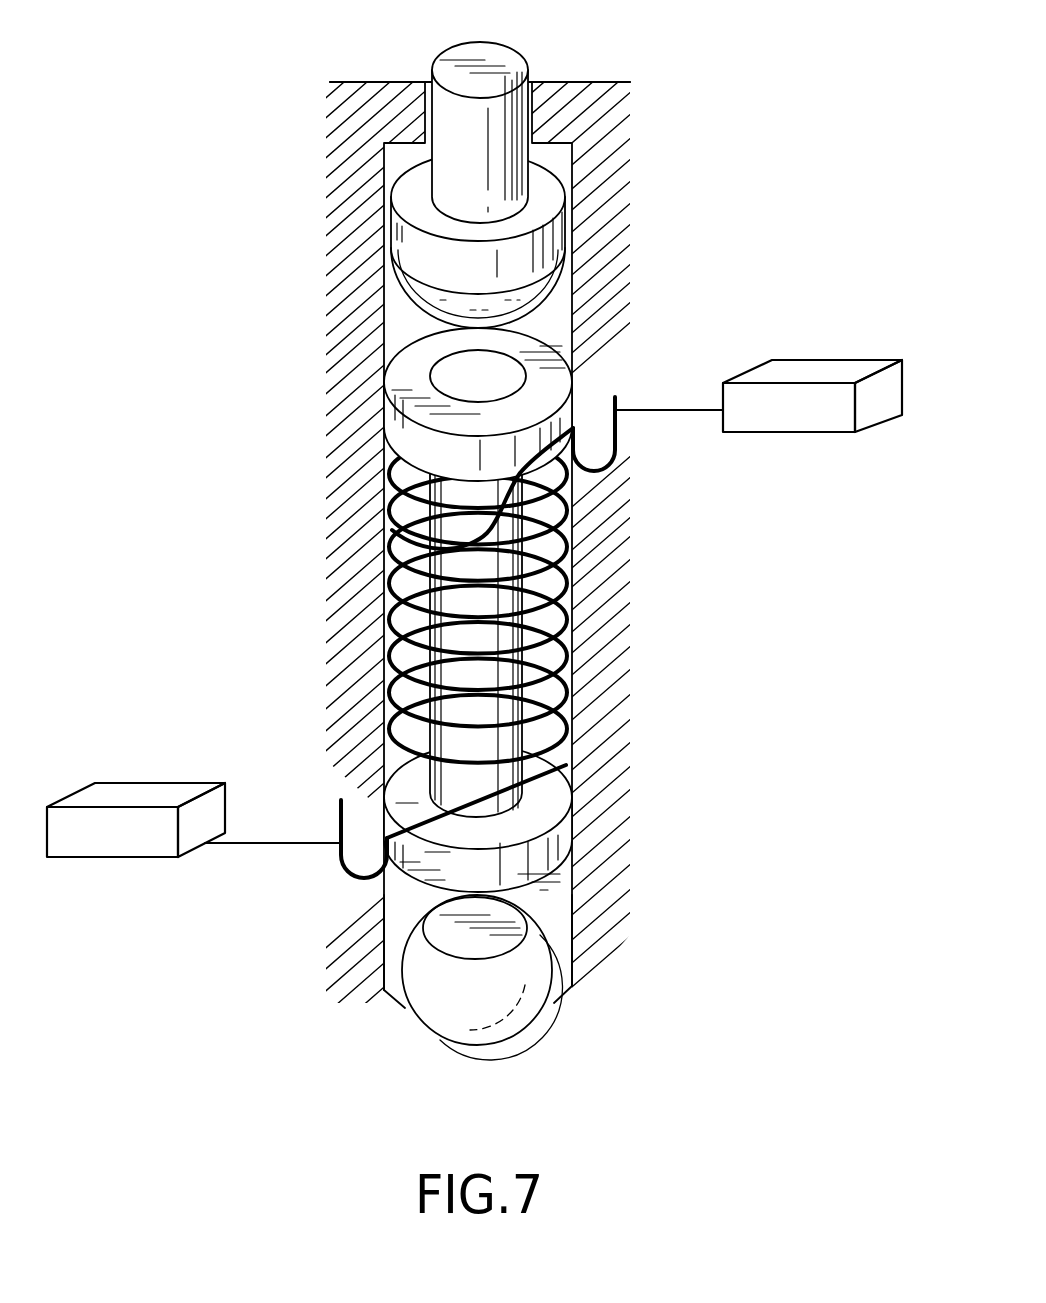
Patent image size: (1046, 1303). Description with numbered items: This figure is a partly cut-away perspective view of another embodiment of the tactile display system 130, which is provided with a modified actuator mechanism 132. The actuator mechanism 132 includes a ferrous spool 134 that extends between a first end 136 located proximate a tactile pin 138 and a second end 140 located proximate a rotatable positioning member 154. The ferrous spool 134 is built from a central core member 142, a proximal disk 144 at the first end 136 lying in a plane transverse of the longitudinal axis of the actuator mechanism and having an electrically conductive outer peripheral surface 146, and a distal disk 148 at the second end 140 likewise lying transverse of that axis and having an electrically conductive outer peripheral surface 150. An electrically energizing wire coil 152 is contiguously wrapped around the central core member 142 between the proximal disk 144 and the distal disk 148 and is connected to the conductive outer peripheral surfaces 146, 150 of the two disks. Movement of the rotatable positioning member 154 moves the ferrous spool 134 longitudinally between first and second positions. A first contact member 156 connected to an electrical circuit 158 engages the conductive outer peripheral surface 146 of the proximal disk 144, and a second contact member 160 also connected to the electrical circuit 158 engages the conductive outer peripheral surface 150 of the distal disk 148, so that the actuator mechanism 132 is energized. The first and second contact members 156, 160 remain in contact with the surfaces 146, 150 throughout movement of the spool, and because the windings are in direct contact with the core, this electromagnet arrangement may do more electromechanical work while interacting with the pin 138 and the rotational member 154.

The tactile display system 130 is at (716, 118).
The actuator mechanism 132 is at (625, 518).
The ferrous spool 134 is at (380, 460).
The first end 136 is at (405, 385).
The tactile pin 138 is at (380, 236).
The second end 140 is at (402, 888).
The central core member 142 is at (470, 500).
The proximal disk 144 is at (556, 331).
The electrically conductive outer peripheral surface 146 is at (400, 435).
The distal disk 148 is at (582, 767).
The electrically conductive outer peripheral surface 150 is at (573, 838).
The electrically energizing wire coil 152 is at (566, 650).
The rotatable positioning member 154 is at (396, 975).
The first contact member 156 is at (620, 440).
The electrical circuit 158 is at (805, 372).
The second contact member 160 is at (335, 818).